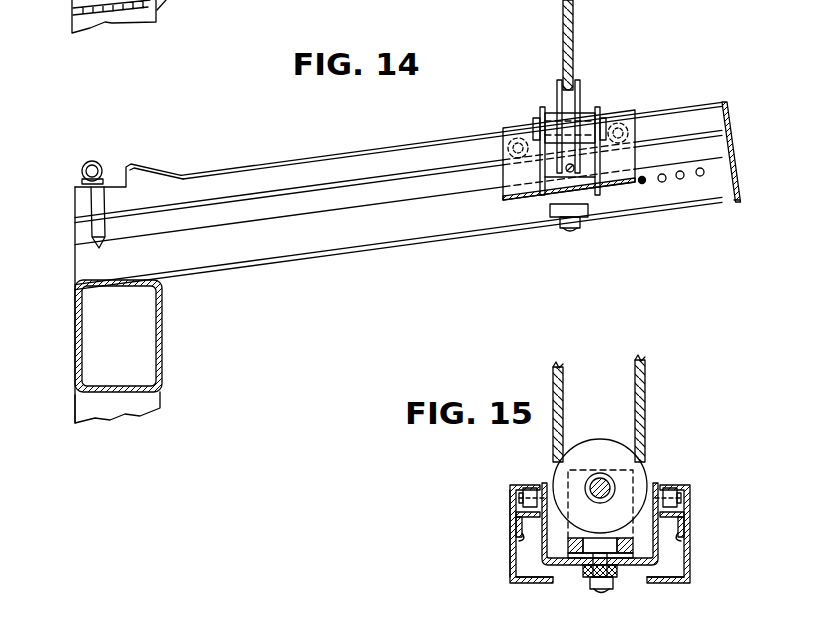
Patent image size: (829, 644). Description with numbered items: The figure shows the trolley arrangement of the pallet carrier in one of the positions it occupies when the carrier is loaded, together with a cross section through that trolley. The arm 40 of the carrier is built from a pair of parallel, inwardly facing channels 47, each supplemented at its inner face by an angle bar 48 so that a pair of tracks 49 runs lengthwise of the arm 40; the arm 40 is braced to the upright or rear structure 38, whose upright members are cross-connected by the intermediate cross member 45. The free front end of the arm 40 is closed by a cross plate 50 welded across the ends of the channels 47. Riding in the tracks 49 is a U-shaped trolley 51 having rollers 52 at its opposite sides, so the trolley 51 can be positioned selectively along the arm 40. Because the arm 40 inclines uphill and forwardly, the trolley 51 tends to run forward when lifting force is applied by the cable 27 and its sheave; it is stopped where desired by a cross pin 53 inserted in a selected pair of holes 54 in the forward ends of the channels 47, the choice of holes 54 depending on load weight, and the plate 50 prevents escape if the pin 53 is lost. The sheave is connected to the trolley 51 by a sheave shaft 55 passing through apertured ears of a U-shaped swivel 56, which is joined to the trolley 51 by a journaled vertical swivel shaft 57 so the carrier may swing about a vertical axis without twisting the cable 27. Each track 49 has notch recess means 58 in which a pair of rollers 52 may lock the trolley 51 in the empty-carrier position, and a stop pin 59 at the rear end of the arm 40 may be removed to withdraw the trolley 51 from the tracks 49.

In FIG. 14, the cable 27 is at (574, 14).
In FIG. 15, the cable 27 is at (646, 382).
In FIG. 14, the upright or rear structure 38 is at (160, 393).
In FIG. 14, the arm element 40 is at (420, 141).
In FIG. 15, the arm element 40 is at (511, 531).
In FIG. 14, the intermediate cross member 45 is at (75, 350).
In FIG. 14, the channels 47 is at (286, 263).
In FIG. 15, the channels 47 is at (512, 573).
In FIG. 14, the angle bars 48 is at (720, 130).
In FIG. 15, the angle bars 48 is at (520, 541).
In FIG. 14, the tracks 49 is at (331, 170).
In FIG. 15, the tracks 49 is at (514, 486).
In FIG. 14, the cross plate 50 is at (738, 182).
In FIG. 14, the trolley 51 is at (503, 206).
In FIG. 15, the trolley 51 is at (545, 566).
In FIG. 14, the rollers 52 is at (516, 134).
In FIG. 15, the rollers 52 is at (533, 485).
In FIG. 14, the cross pin 53 is at (643, 185).
In FIG. 14, the holes 54 is at (700, 177).
In FIG. 14, the sheave shaft 55 is at (536, 118).
In FIG. 15, the sheave shaft 55 is at (603, 484).
In FIG. 14, the U-shaped swivel 56 is at (553, 189).
In FIG. 15, the U-shaped swivel 56 is at (571, 556).
In FIG. 14, the swivel shaft 57 is at (582, 226).
In FIG. 15, the swivel shaft 57 is at (600, 591).
In FIG. 14, the notch recess means 58 is at (137, 173).
In FIG. 14, the stop pin 59 is at (92, 160).